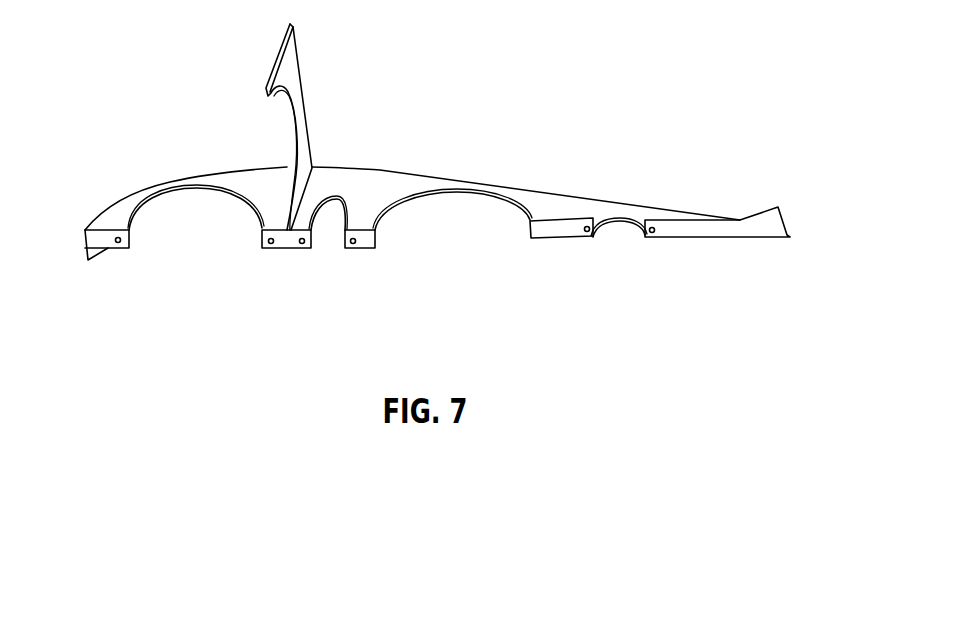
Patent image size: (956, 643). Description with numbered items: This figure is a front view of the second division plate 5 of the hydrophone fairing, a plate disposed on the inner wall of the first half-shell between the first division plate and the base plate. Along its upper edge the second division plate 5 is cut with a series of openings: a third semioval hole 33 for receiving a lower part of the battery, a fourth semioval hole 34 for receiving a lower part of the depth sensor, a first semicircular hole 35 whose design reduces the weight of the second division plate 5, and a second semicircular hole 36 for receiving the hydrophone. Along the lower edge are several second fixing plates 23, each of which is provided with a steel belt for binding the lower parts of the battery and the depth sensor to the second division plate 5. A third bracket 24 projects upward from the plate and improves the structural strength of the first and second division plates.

The second division plate 5 is at (242, 180).
The third bracket 24 is at (293, 83).
The third semioval hole 33 is at (182, 220).
The fourth semioval hole 34 is at (331, 227).
The first semicircular hole 35 is at (473, 217).
The second semicircular hole 36 is at (620, 238).
The second fixing plates 23 is at (107, 248).